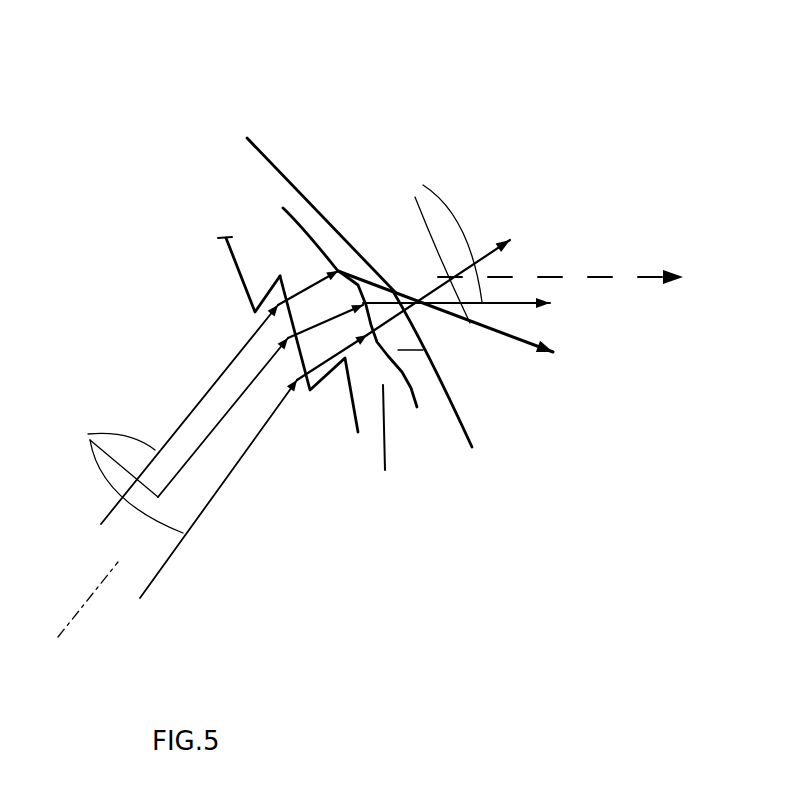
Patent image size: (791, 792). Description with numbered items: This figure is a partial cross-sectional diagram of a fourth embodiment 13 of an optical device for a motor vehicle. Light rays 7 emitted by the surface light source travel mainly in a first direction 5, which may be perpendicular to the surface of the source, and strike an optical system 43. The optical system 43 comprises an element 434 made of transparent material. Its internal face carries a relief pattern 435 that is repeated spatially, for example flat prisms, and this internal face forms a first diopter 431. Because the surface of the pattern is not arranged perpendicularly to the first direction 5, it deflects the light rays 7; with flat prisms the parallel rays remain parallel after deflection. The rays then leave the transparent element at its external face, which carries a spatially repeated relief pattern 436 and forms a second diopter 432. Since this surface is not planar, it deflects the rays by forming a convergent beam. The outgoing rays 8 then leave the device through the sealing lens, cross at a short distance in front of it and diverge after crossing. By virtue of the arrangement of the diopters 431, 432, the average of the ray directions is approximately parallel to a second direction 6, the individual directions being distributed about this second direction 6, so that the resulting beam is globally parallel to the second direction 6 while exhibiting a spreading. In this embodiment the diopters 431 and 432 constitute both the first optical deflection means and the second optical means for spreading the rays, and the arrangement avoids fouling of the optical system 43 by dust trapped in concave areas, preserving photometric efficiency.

The optical system 43 is at (349, 160).
The first diopter 431 is at (238, 278).
The second diopter 432 is at (305, 222).
The element made of transparent material 434 is at (385, 470).
The relief pattern 435 is at (427, 412).
The relief pattern 436 is at (372, 316).
The fourth embodiment of the optical device 13 is at (135, 272).
The first direction 5 is at (92, 595).
The second direction 6 is at (565, 277).
The beam of rays 7 is at (127, 479).
The outgoing rays 8 is at (444, 249).